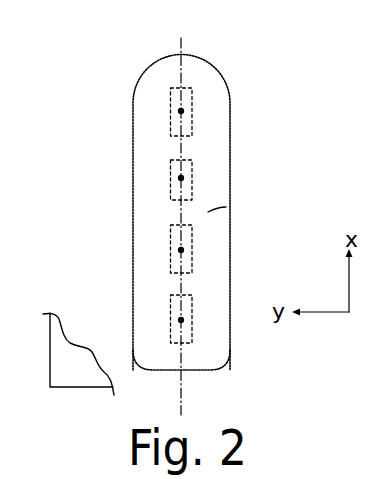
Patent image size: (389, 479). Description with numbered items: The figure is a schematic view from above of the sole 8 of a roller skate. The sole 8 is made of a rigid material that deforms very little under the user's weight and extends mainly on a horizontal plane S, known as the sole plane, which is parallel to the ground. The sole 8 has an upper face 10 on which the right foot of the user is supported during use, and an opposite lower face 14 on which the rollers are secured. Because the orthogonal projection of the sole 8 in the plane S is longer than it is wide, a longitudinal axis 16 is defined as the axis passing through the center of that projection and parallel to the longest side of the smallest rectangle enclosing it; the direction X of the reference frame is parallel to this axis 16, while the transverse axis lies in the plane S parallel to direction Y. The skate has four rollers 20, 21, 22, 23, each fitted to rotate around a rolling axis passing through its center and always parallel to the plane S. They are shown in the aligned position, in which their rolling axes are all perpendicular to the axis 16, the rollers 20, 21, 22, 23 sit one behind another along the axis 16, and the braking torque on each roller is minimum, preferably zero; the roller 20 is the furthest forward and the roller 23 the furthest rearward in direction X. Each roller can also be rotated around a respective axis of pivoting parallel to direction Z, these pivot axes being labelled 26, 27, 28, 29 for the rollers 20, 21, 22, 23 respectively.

The sole 8 is at (236, 170).
The upper face 10 is at (217, 130).
The lower face 14 is at (226, 207).
The longitudinal axis 16 is at (182, 55).
The roller 20 is at (166, 106).
The roller 21 is at (164, 176).
The roller 22 is at (164, 248).
The roller 23 is at (206, 320).
The axis of pivoting 26 is at (181, 111).
The axis of pivoting 27 is at (181, 178).
The axis of pivoting 28 is at (181, 250).
The axis of pivoting 29 is at (183, 320).
The sole plane S is at (80, 366).